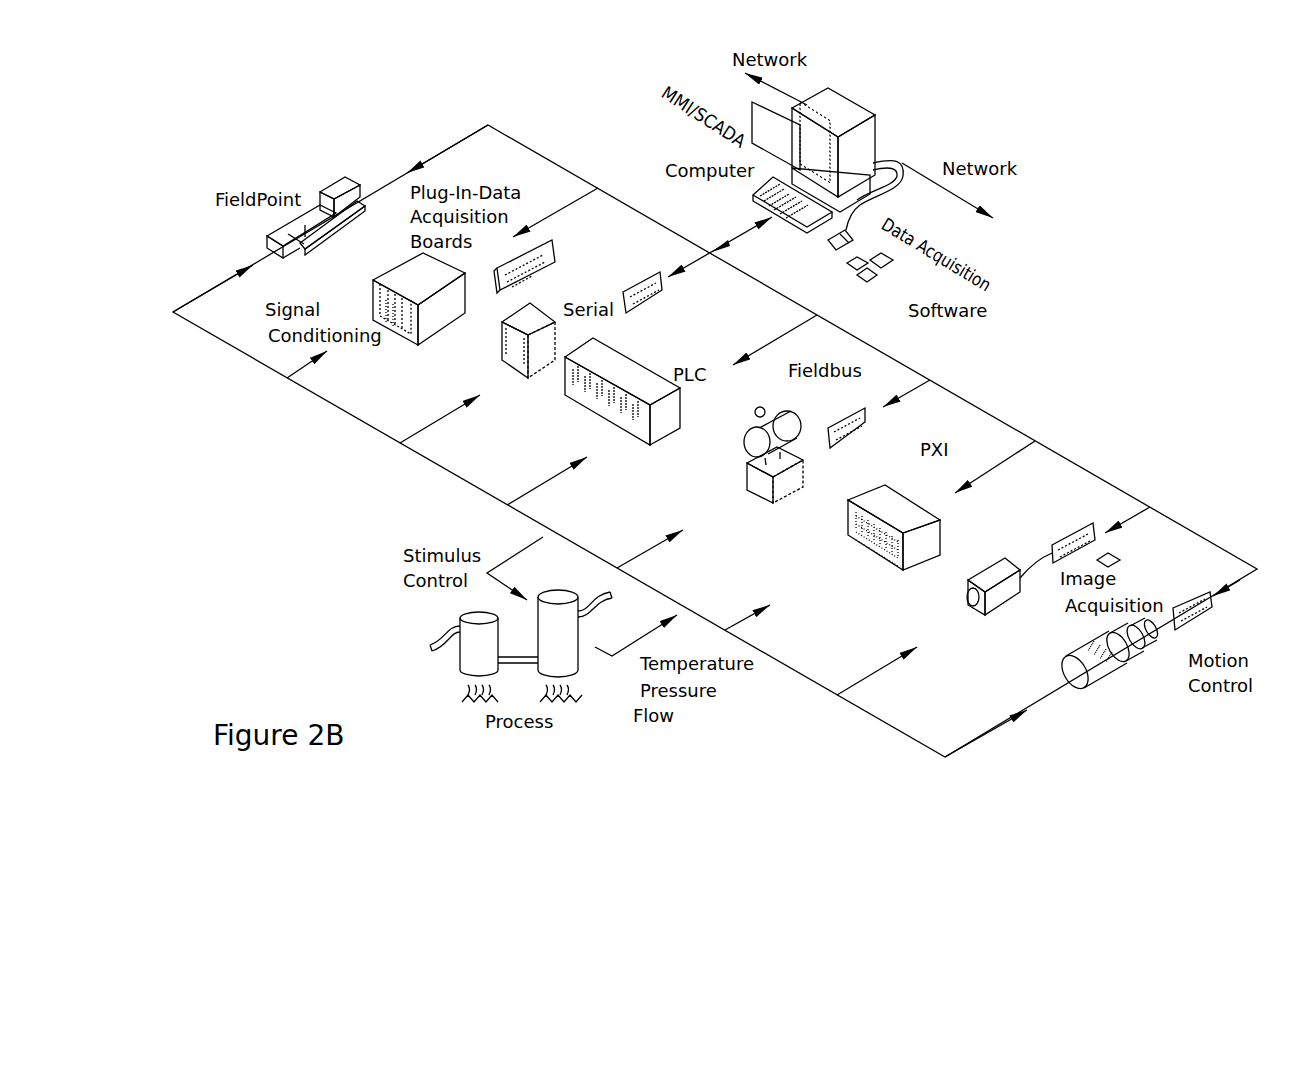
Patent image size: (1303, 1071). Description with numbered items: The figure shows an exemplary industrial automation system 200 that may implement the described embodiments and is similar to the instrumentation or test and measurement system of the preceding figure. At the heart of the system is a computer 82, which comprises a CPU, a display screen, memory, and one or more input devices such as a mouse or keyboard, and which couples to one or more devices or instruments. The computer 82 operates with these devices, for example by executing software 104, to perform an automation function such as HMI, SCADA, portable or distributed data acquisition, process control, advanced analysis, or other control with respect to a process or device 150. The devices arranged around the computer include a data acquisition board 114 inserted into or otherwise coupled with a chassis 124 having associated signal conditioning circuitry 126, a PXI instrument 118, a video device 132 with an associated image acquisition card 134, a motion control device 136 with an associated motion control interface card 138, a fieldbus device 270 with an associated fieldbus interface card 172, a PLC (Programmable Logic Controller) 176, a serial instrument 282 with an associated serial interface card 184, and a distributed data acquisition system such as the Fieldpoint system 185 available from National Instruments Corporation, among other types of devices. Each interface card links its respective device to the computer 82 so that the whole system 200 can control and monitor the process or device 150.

The industrial automation system 200 is at (1128, 200).
The computer 82 is at (850, 110).
The software 104 is at (894, 299).
The Fieldpoint system 185 is at (326, 183).
The chassis 124 is at (397, 275).
The signal conditioning circuitry 126 is at (422, 333).
The data acquisition board 114 is at (552, 240).
The serial interface card 184 is at (637, 287).
The serial instrument 282 is at (507, 358).
The PLC (Programmable Logic Controller) 176 is at (635, 370).
The fieldbus interface card 172 is at (847, 413).
The fieldbus device 270 is at (747, 485).
The PXI instrument 118 is at (895, 498).
The video device 132 is at (973, 600).
The image acquisition card 134 is at (1065, 535).
The motion control device 136 is at (1097, 673).
The motion control interface card 138 is at (1197, 613).
The process or device 150 is at (438, 638).